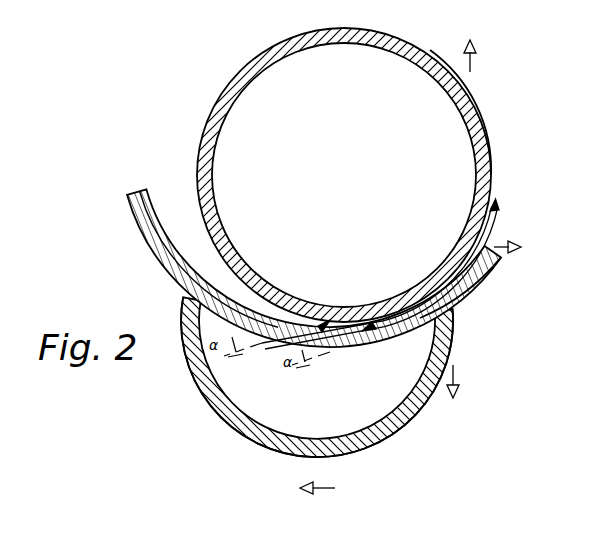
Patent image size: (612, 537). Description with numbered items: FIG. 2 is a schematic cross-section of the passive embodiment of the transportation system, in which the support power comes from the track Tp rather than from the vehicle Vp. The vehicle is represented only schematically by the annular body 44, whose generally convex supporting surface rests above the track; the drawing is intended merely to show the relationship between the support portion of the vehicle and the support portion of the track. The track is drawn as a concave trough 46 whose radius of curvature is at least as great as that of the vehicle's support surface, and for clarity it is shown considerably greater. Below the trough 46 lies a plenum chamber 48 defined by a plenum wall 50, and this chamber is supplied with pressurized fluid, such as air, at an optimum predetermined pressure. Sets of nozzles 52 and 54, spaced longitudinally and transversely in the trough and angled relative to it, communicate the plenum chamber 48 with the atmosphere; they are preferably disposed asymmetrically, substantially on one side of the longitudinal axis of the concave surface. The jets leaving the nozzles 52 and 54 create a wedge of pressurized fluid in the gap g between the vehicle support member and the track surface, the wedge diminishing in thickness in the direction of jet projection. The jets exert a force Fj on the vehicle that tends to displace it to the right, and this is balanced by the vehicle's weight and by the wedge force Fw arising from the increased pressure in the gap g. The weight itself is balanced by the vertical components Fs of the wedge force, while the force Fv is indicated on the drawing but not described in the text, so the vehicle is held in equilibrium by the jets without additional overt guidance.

The annular body 44 is at (221, 96).
The trough 46 is at (500, 255).
The plenum chamber 48 is at (296, 424).
The plenum wall 50 is at (385, 440).
The nozzles 52 is at (262, 344).
The nozzles 54 is at (332, 355).
The gap g is at (407, 313).
The track Tp is at (468, 290).
The vehicle Vp is at (471, 100).
The vertical components of the wedge force Fs is at (468, 43).
The jet force Fj is at (509, 236).
The vertical force Fv is at (451, 399).
The wedge force Fw is at (298, 492).